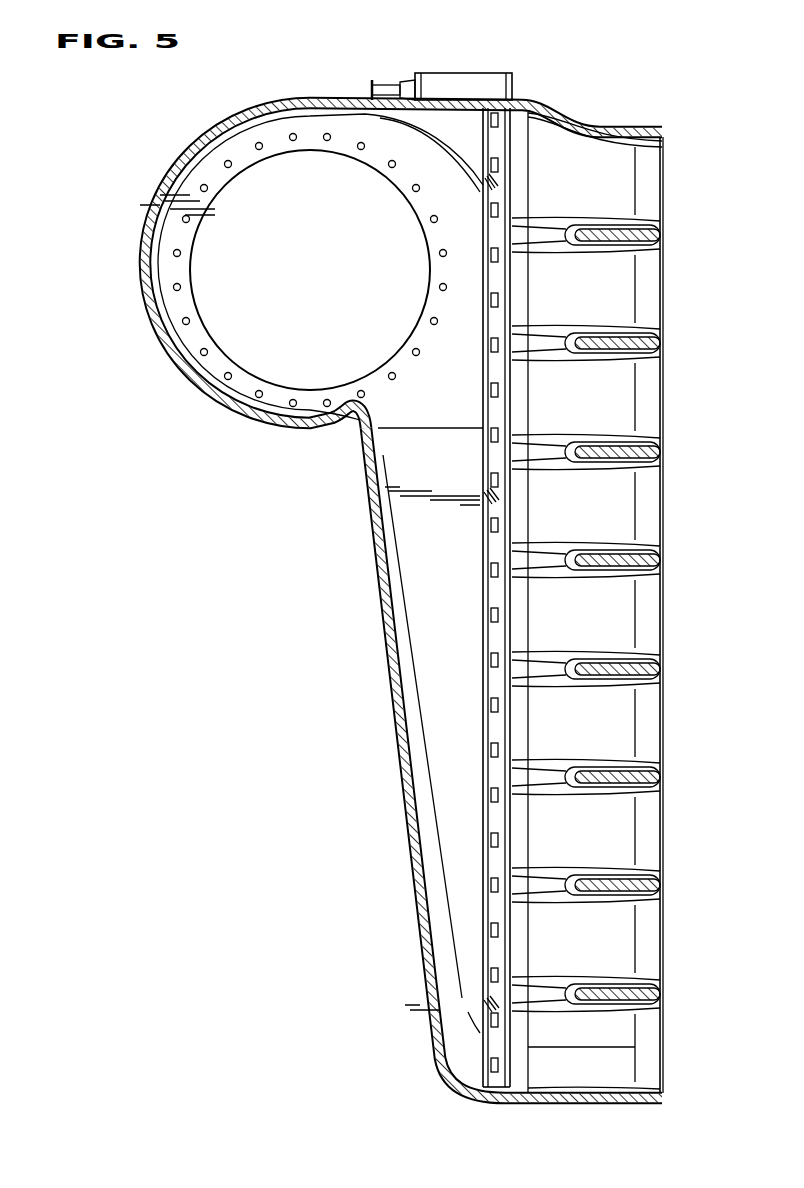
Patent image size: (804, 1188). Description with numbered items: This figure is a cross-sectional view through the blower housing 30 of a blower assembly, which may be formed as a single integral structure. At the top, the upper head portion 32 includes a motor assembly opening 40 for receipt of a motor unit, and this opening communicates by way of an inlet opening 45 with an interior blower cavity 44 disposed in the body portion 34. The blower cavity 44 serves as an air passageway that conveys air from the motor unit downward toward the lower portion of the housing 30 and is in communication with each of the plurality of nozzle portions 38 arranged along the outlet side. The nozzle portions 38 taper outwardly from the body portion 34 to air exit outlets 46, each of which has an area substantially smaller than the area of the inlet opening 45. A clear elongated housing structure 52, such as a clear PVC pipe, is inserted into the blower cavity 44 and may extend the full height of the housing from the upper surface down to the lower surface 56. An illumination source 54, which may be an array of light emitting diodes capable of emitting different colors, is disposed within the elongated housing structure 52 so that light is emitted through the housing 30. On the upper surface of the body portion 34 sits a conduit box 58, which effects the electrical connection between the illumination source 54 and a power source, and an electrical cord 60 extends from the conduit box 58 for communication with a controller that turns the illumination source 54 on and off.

The blower housing 30 is at (614, 90).
The upper head portion 32 is at (331, 97).
The body portion 34 is at (376, 574).
The nozzle portions 38 is at (622, 524).
The motor assembly opening 40 is at (302, 154).
The interior blower cavity 44 is at (453, 671).
The inlet opening 45 is at (427, 428).
The air exit outlet 46 is at (662, 752).
The elongated housing structure 52 is at (506, 148).
The illumination source 54 is at (498, 300).
The lower surface 56 is at (550, 1104).
The conduit box 58 is at (471, 73).
The electrical cord 60 is at (384, 83).